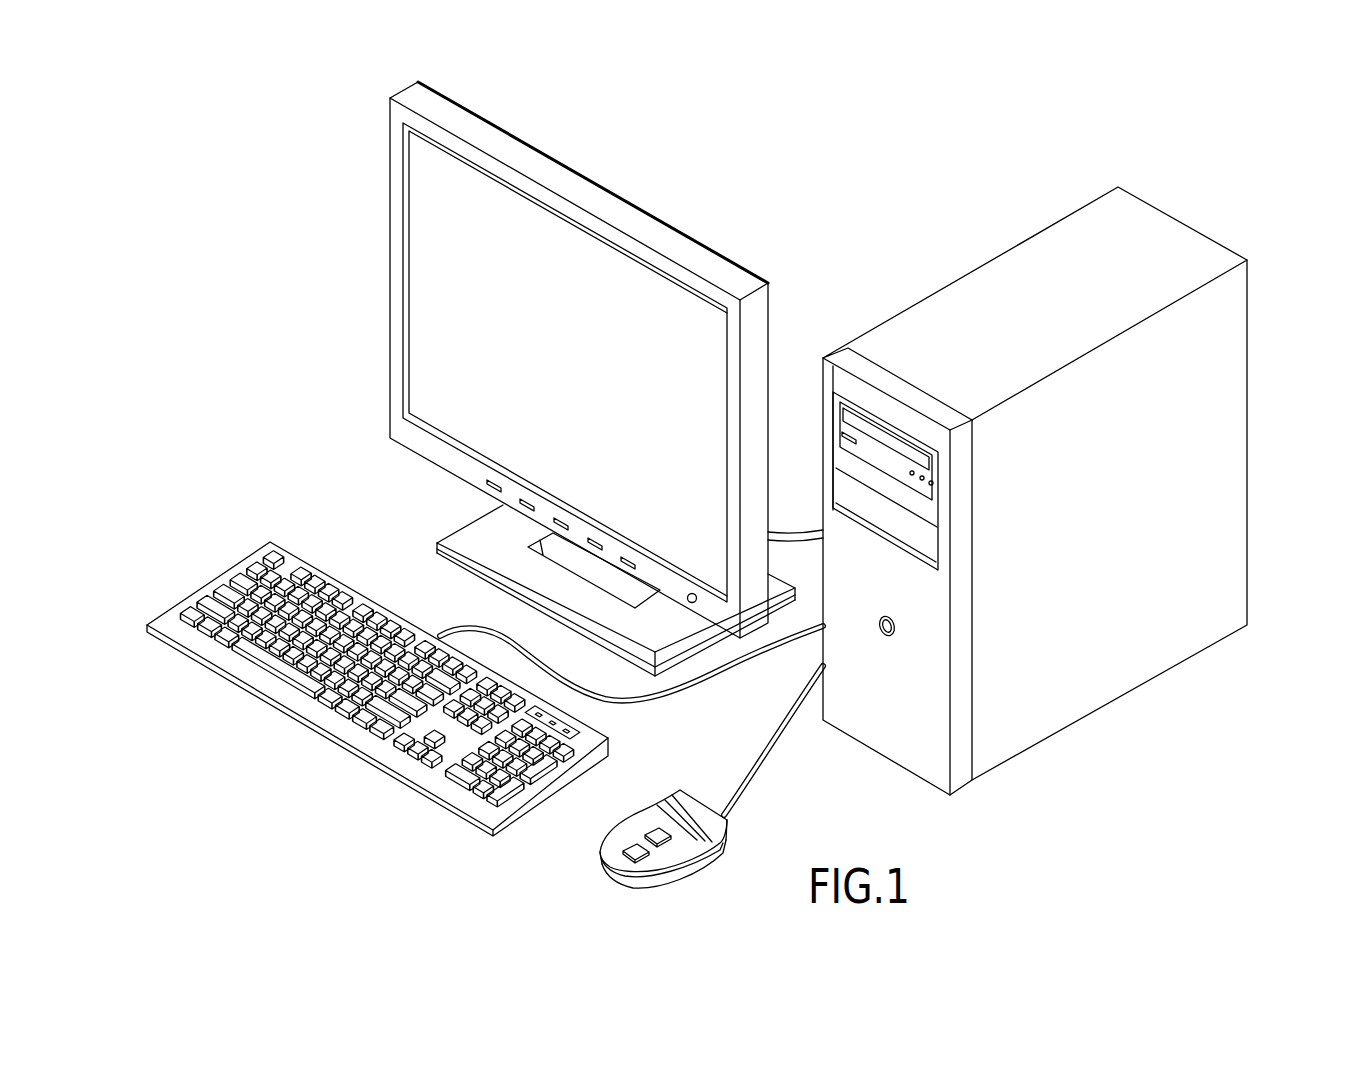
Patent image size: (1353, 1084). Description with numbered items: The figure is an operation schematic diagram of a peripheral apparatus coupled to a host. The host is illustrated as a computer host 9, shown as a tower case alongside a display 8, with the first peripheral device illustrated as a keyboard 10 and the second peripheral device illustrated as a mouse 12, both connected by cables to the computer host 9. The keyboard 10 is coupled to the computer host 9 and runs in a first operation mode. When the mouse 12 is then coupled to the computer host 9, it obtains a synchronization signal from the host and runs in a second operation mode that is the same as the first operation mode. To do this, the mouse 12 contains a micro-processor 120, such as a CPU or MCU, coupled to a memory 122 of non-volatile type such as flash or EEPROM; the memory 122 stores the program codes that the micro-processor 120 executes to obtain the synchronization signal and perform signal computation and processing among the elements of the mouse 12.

The display 8 is at (643, 223).
The computer host 9 is at (970, 290).
The keyboard 10 is at (307, 710).
The mouse 12 is at (634, 861).
The micro-processor 120 is at (648, 834).
The memory 122 is at (620, 856).